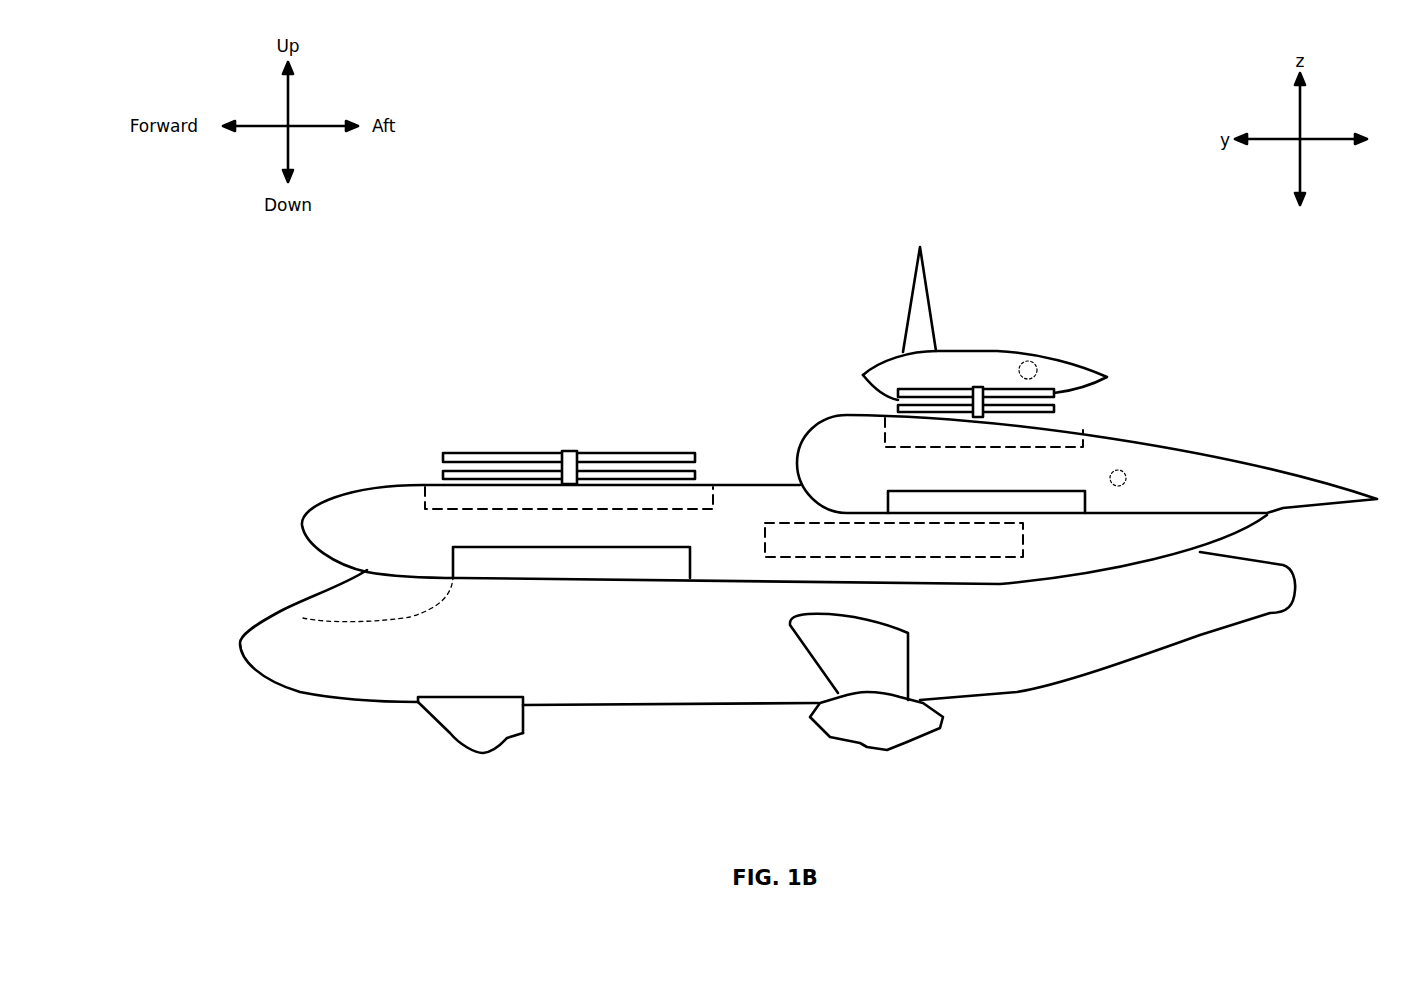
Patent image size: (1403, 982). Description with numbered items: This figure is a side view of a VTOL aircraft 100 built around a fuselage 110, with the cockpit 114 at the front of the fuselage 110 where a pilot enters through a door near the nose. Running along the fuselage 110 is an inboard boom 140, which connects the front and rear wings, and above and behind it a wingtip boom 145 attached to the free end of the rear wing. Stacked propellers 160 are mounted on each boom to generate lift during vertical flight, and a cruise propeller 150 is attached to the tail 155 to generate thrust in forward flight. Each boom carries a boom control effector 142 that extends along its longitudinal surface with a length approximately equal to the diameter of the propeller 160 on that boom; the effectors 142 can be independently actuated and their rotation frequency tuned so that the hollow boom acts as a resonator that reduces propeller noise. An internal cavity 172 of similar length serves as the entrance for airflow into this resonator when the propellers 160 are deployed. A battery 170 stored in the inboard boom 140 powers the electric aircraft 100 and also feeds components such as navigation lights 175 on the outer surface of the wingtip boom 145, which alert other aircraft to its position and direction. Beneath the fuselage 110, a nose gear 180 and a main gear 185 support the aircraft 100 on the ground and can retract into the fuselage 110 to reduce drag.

The aircraft 100 is at (750, 441).
The fuselage 110 is at (387, 663).
The cockpit 114 is at (345, 610).
The inboard boom 140 is at (380, 513).
The boom control effector 142 is at (1180, 678).
The wingtip boom 145 is at (1180, 483).
The cruise propeller 150 is at (920, 310).
The tail 155 is at (1002, 370).
The propeller 160 is at (923, 395).
The battery 170 is at (927, 542).
The internal cavity 172 is at (907, 435).
The navigation light 175 is at (1030, 368).
The nose gear 180 is at (485, 725).
The main gear 185 is at (898, 725).